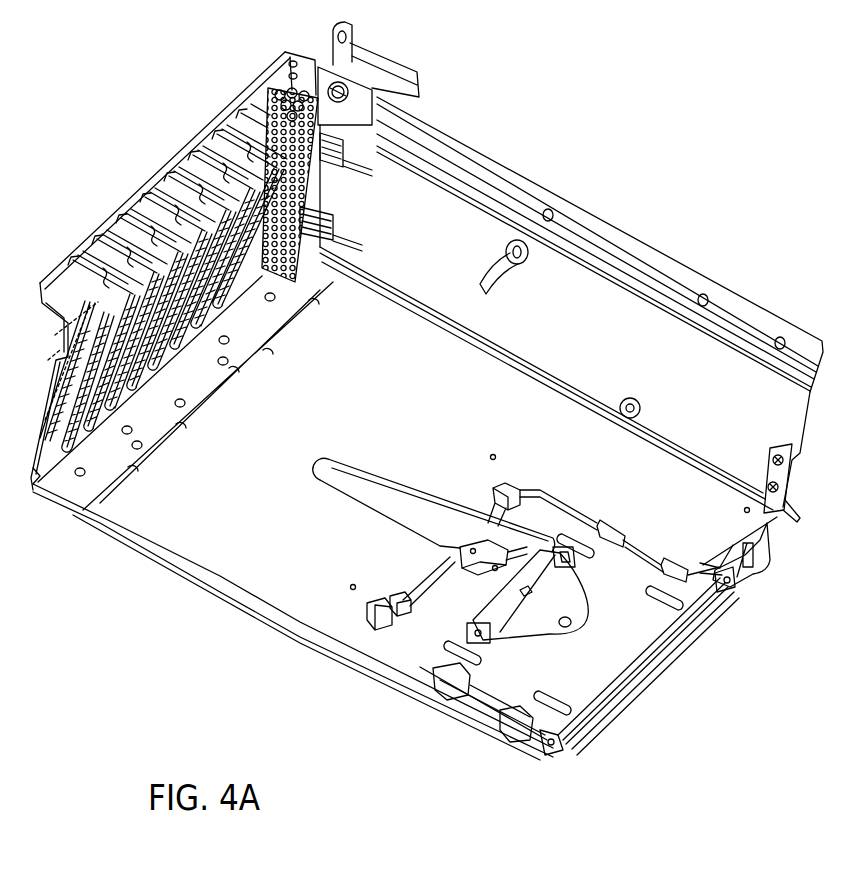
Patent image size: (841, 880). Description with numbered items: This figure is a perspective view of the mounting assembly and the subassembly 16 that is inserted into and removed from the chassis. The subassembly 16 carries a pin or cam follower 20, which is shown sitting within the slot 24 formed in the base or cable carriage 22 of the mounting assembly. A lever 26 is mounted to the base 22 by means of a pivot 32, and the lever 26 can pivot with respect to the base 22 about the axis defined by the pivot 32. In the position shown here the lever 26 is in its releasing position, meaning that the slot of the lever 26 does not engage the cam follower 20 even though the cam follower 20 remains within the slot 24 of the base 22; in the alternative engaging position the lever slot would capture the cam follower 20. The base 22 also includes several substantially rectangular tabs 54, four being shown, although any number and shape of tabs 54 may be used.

The subassembly 16 is at (203, 530).
The pin or cam follower 20 is at (460, 572).
The base or cable carriage 22 is at (617, 628).
The slot 24 is at (448, 550).
The lever 26 is at (370, 487).
The pivot 32 is at (560, 624).
The tabs 54 is at (660, 563).